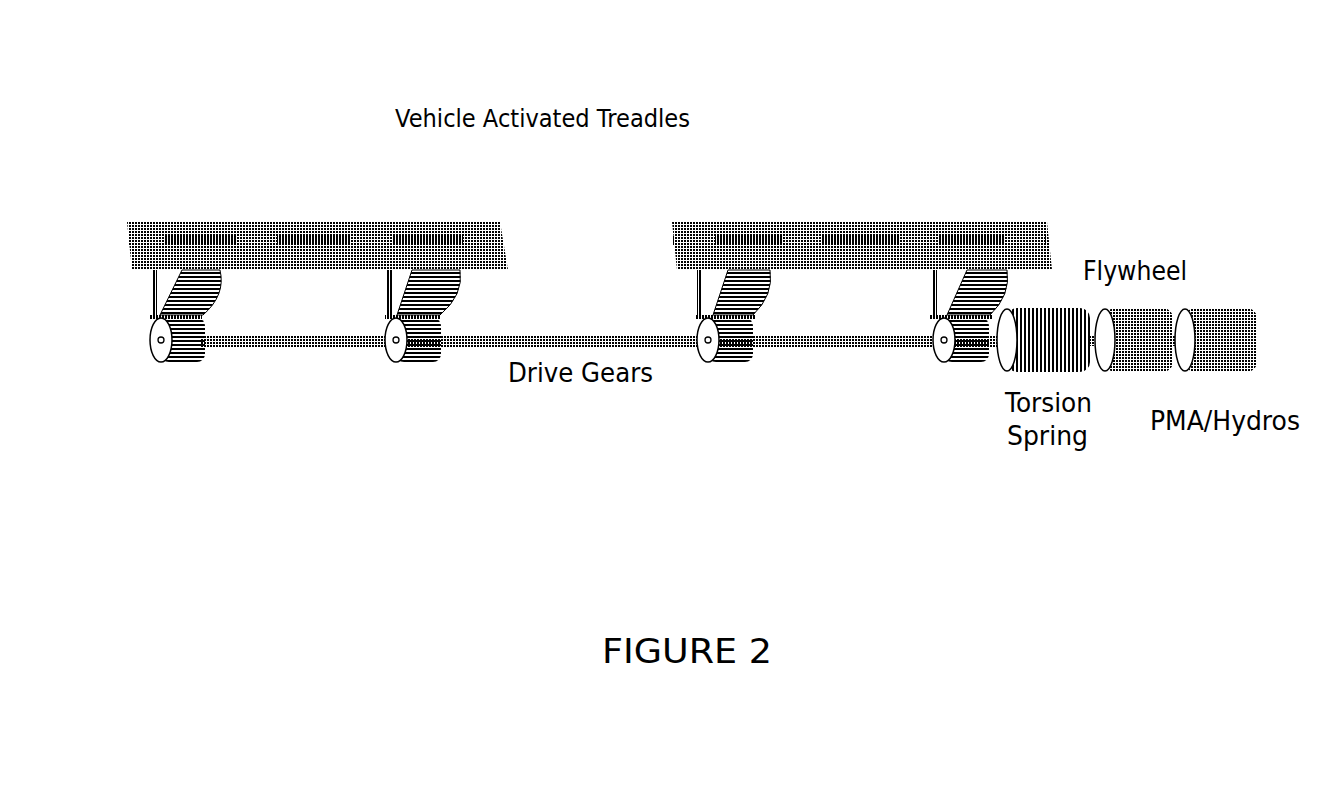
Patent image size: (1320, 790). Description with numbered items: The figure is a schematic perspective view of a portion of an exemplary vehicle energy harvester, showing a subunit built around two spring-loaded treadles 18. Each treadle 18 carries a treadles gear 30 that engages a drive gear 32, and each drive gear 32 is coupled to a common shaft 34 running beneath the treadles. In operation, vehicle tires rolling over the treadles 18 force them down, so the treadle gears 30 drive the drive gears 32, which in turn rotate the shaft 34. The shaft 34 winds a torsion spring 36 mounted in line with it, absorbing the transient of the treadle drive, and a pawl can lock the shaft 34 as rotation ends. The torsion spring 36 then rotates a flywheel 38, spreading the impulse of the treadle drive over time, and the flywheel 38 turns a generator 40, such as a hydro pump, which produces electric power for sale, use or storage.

The spring-loaded treadles 18 is at (316, 228).
The treadles gear 30 is at (183, 284).
The drive gear 32 is at (428, 360).
The shaft 34 is at (279, 343).
The torsion spring 36 is at (1067, 313).
The flywheel 38 is at (1142, 362).
The generator 40 is at (1236, 322).